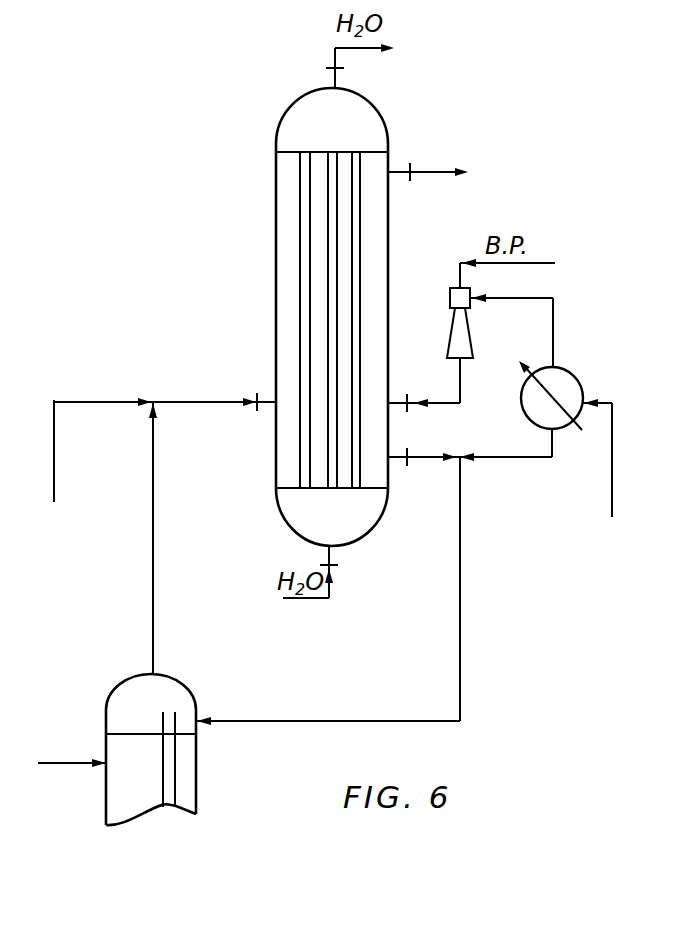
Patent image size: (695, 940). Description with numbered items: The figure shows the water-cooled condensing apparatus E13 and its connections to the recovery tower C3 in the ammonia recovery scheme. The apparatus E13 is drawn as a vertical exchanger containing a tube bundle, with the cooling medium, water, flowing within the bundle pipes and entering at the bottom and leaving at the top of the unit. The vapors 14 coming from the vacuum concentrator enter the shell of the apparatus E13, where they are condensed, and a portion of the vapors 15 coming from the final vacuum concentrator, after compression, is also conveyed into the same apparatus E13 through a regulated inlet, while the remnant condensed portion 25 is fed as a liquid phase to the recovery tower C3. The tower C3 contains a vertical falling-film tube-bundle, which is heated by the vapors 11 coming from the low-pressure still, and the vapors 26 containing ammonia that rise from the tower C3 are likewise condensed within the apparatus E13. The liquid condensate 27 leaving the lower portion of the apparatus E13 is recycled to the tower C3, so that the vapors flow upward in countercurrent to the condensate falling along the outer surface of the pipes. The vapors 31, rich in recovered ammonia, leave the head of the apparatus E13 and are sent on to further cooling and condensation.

The vapors from the low-pressure still 11 is at (72, 753).
The vapors from the vacuum concentrator 14 is at (165, 447).
The vapors from the final vacuum concentrator 15 is at (615, 458).
The condensed portion of the vapors 25 is at (521, 411).
The vapors from the recovery tower 26 is at (169, 538).
The liquid condensate 27 is at (328, 576).
The vapors rich in recovered ammonia 31 is at (428, 161).
The water-cooled apparatus E13 is at (310, 317).
The recovery tower C3 is at (128, 749).